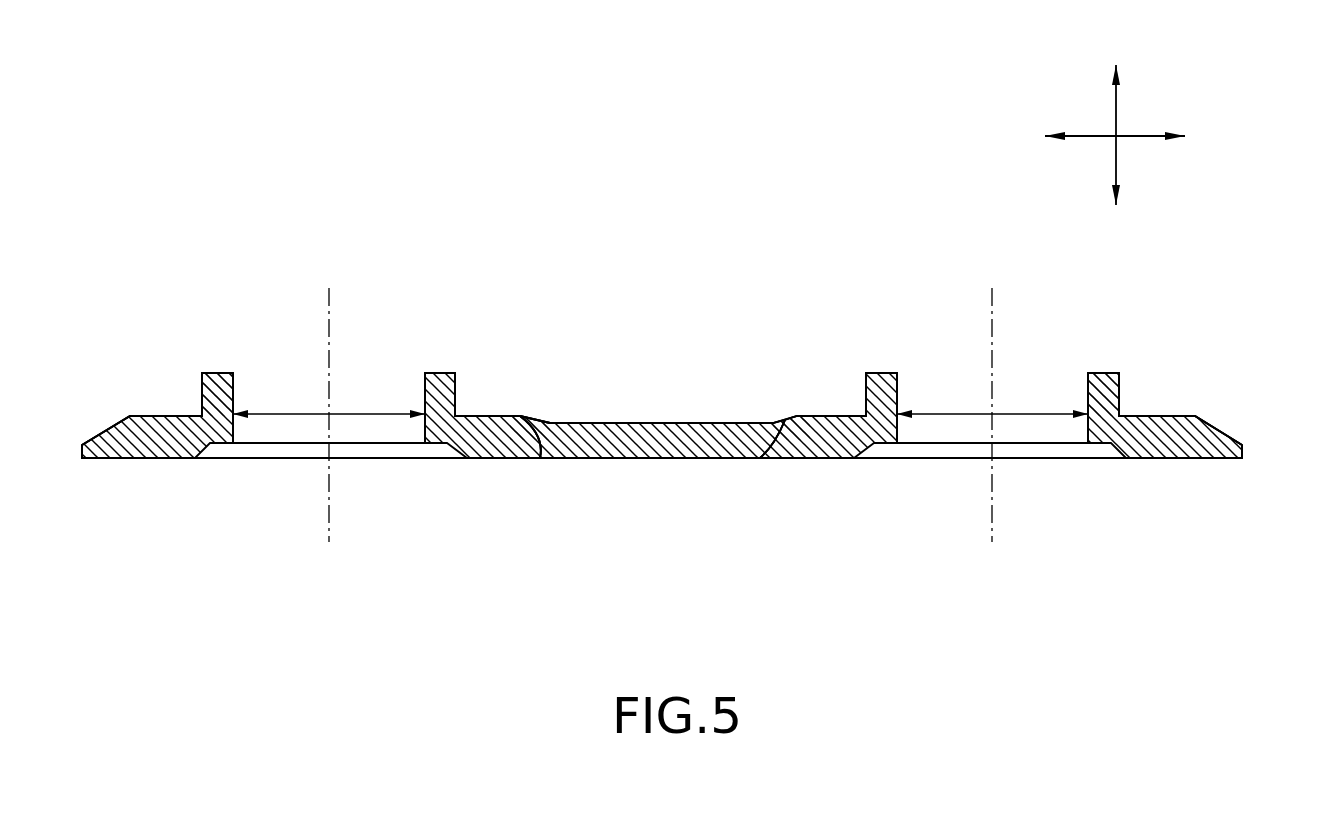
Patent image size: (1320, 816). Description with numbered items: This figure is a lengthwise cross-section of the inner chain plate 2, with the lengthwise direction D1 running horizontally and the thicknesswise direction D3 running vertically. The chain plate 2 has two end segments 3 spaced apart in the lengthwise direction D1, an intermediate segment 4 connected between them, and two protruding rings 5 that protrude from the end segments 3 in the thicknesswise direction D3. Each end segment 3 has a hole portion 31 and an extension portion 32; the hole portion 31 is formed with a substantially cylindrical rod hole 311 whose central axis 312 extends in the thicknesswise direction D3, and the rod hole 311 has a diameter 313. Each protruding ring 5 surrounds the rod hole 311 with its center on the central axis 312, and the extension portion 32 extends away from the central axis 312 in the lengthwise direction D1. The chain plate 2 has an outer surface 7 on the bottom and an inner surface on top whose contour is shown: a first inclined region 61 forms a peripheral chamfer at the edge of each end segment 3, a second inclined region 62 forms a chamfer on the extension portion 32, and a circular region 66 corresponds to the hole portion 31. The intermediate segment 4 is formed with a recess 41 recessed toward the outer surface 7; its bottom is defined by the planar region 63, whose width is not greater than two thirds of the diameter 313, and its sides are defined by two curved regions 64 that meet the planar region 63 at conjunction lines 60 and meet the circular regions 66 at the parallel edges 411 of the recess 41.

The chain plate 2 is at (730, 245).
The end segment 3 is at (208, 522).
The hole portion 31 is at (168, 420).
The extension portion 32 is at (113, 438).
The rod hole 311 is at (287, 432).
The central axis 312 is at (329, 315).
The diameter 313 is at (367, 417).
The intermediate segment 4 is at (652, 464).
The recess 41 is at (652, 412).
The edge 411 is at (527, 416).
The protruding ring 5 is at (216, 373).
The conjunction line 60 is at (569, 422).
The first inclined region 61 is at (88, 435).
The second inclined region 62 is at (102, 428).
The planar region 63 is at (698, 423).
The curved region 64 is at (540, 458).
The circular region 66 is at (484, 416).
The outer surface 7 is at (797, 458).
The lengthwise direction D1 is at (1130, 136).
The thicknesswise direction D3 is at (1114, 110).